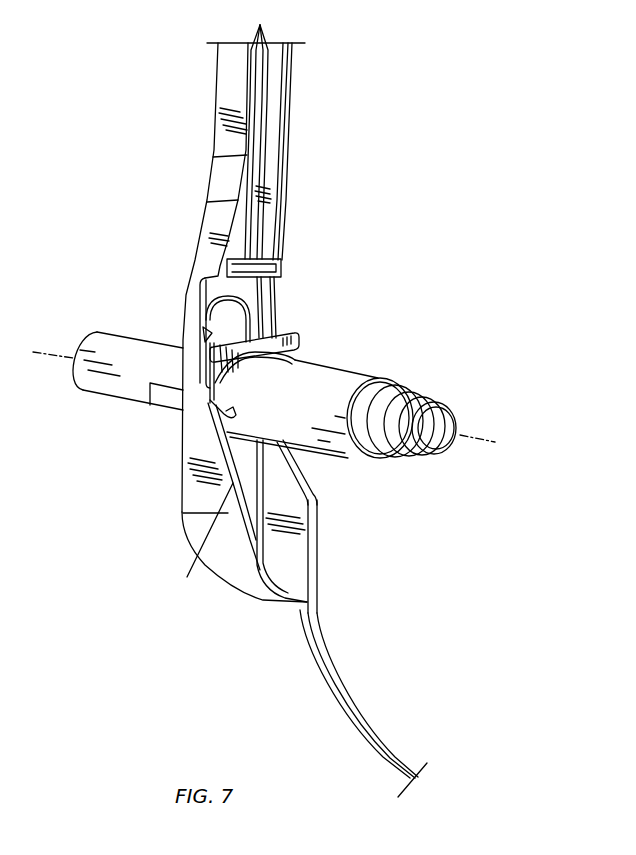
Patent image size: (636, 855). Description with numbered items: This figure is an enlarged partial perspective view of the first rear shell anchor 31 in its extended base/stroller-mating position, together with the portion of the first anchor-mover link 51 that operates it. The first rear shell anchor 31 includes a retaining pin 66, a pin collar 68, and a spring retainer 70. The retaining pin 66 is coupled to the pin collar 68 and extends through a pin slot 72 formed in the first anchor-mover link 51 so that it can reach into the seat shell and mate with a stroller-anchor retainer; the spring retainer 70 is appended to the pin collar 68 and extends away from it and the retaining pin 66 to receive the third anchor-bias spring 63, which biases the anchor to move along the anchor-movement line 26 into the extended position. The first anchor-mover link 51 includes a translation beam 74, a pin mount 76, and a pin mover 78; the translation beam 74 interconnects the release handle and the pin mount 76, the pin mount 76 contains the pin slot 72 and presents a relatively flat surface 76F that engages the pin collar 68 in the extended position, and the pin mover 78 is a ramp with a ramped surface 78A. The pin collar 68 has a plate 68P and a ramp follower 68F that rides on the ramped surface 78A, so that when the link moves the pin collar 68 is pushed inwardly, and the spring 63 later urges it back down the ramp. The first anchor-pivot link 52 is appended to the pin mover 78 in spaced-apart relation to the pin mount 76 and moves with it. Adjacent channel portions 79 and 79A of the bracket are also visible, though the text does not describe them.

The anchor-movement line 26 is at (42, 342).
The first rear shell anchor 31 is at (137, 490).
The first anchor-mover link 51 is at (300, 182).
The first anchor-pivot link 52 is at (318, 680).
The third anchor-bias spring 63 is at (456, 447).
The retaining pin 66 is at (97, 393).
The pin collar 68 is at (290, 318).
The ramp follower 68F is at (242, 387).
The plate 68P is at (292, 346).
The spring retainer 70 is at (323, 440).
The pin slot 72 is at (213, 310).
The translation beam 74 is at (268, 120).
The pin mount 76 is at (217, 280).
The flat surface 76F is at (205, 345).
The pin mover 78 is at (193, 490).
The ramped surface 78A is at (199, 546).
The channel 79 is at (300, 547).
The channel arm 79A is at (307, 477).